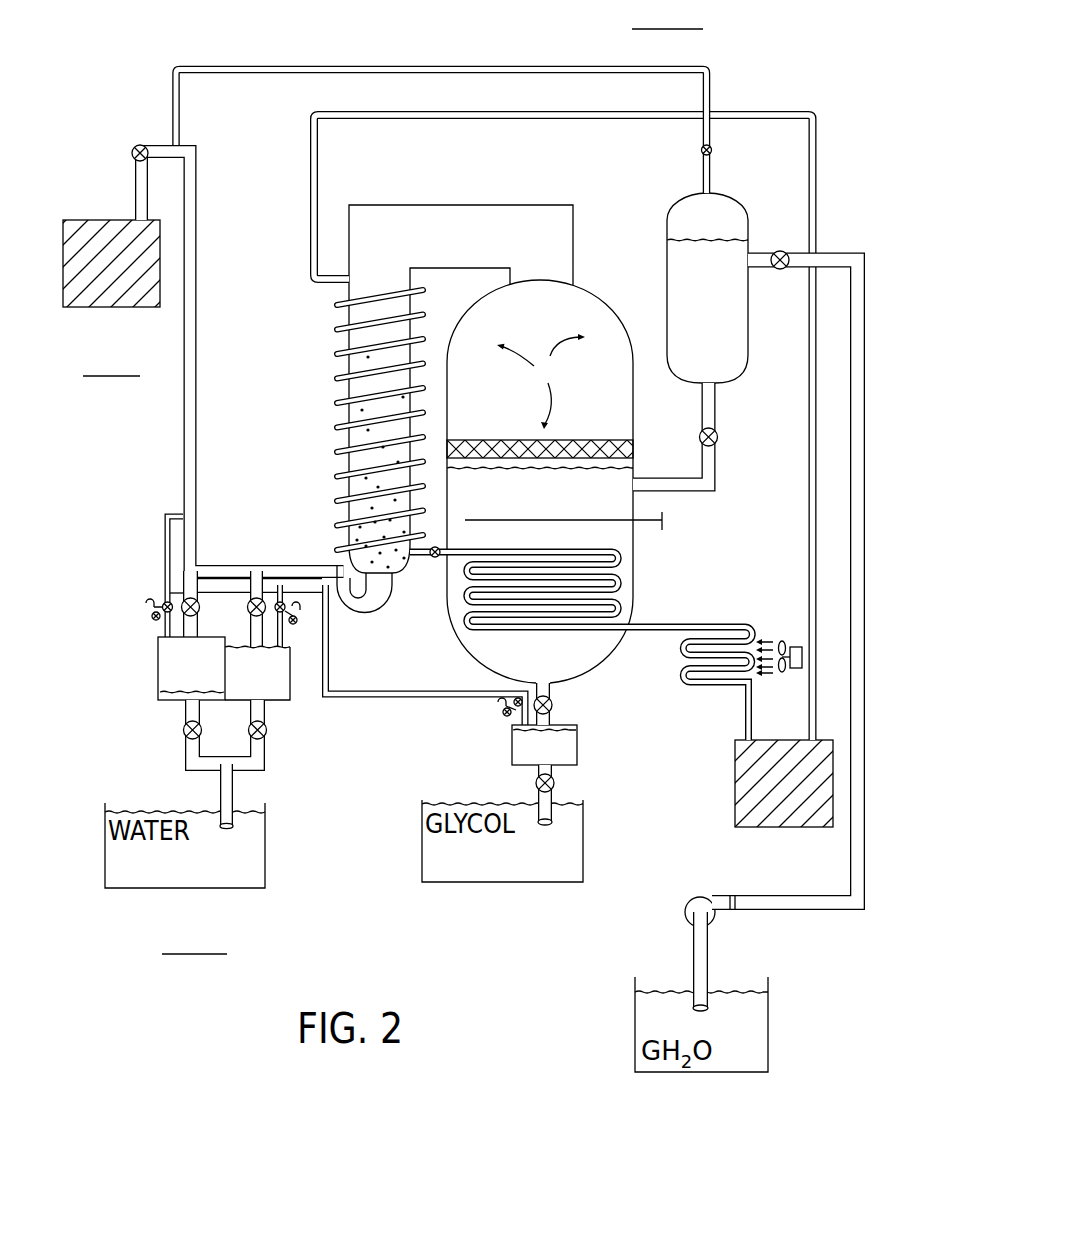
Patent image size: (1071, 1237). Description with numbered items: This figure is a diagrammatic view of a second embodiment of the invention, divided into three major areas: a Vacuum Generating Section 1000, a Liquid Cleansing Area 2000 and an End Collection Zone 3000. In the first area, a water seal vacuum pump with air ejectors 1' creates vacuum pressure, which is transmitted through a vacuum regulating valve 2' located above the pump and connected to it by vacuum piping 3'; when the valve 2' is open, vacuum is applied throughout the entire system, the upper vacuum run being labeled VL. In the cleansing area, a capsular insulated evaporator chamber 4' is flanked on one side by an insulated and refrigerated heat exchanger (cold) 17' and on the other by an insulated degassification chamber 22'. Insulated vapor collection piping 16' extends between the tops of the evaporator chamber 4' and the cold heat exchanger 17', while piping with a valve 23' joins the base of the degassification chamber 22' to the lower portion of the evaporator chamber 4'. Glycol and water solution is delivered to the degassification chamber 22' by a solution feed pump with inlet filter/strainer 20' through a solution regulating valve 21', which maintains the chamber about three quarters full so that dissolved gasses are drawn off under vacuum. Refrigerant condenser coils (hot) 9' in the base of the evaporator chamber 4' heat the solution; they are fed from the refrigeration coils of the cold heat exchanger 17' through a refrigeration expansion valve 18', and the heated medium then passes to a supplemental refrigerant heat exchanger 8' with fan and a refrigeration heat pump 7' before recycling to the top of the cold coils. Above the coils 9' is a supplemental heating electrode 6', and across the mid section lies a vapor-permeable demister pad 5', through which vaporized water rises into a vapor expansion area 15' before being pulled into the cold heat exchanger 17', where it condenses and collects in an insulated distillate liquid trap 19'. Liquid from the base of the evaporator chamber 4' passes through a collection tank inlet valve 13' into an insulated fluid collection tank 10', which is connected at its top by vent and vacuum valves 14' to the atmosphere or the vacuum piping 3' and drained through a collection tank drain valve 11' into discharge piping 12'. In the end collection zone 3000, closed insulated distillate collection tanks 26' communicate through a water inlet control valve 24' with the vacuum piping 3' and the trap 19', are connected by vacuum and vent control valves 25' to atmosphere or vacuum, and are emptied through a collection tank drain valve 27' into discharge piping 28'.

The water seal vacuum pump with air ejectors 1' is at (111, 238).
The vacuum regulating valve 2' is at (130, 159).
The vacuum piping 3' is at (242, 362).
The insulated evaporator chamber 4' is at (563, 481).
The demister pad 5' is at (561, 453).
The supplemental heating electrode 6' is at (589, 521).
The refrigeration heat pump 7' is at (766, 783).
The supplemental refrigerant heat exchanger 8' is at (737, 685).
The refrigerant condenser coils (hot) 9' is at (575, 618).
The insulated fluid collection tank 10' is at (523, 745).
The collection tank drain valve 11' is at (522, 786).
The discharge piping 12' is at (550, 818).
The collection tank inlet valve 13' is at (575, 704).
The vent valve and vacuum valve 14' is at (400, 656).
The vapor expansion area 15' is at (541, 381).
The insulated vapor collection piping 16' is at (563, 427).
The insulated and refrigerated heat exchanger (cold) 17' is at (353, 429).
The refrigeration expansion valve 18' is at (440, 580).
The insulated distillate liquid trap 19' is at (383, 599).
The solution feed pump with inlet filter/strainer 20' is at (771, 635).
The solution regulating valve 21' is at (783, 237).
The insulated degassification chamber 22' is at (736, 288).
The valve 23' is at (707, 434).
The water inlet control valve 24' is at (246, 609).
The vacuum and vent control valves 25' is at (155, 577).
The insulated distillate collection tanks 26' is at (204, 668).
The collection tank drain valve 27' is at (197, 732).
The discharge piping 28' is at (235, 819).
The Vacuum Generating Section 1000 is at (111, 363).
The Liquid Cleansing Area 2000 is at (667, 14).
The End Collection Zone 3000 is at (194, 941).
The vapor line VL is at (468, 64).